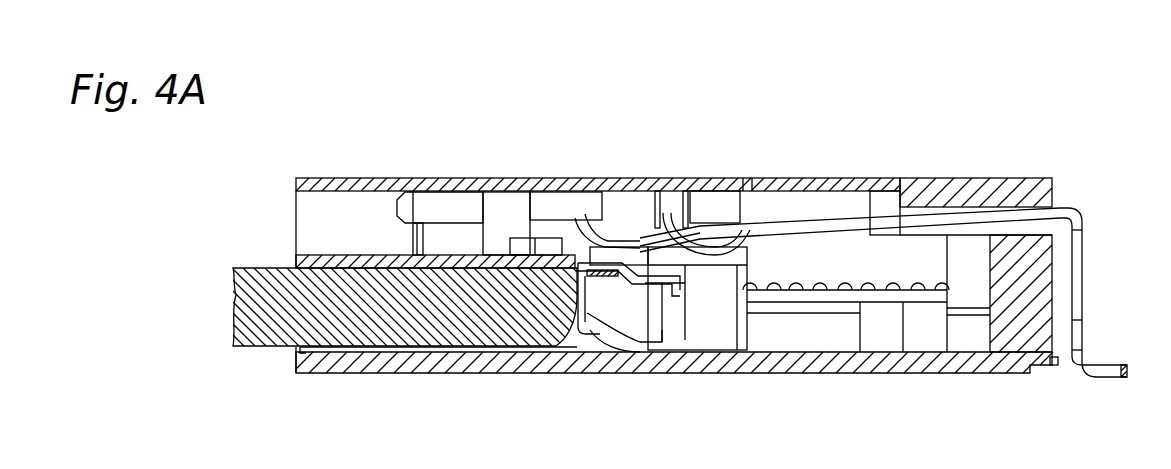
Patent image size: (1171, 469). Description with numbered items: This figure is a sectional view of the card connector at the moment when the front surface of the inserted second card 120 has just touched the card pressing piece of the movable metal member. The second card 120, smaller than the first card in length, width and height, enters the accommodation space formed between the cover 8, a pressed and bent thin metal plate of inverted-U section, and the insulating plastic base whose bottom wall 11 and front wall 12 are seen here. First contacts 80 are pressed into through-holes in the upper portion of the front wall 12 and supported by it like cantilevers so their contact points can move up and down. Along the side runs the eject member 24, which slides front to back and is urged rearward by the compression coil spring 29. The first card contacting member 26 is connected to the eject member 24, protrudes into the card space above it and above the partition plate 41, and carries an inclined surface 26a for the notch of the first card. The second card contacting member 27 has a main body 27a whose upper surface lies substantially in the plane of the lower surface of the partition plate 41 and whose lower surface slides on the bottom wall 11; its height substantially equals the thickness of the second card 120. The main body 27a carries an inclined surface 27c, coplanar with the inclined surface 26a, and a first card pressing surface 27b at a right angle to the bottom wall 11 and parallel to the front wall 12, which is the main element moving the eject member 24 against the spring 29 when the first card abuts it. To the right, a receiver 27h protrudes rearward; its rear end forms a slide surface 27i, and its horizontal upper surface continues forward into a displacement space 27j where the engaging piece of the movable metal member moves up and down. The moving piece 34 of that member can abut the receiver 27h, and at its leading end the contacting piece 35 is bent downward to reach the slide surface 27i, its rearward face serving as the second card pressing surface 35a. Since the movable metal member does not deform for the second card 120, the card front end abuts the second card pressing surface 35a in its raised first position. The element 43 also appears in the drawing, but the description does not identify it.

The cover 8 is at (354, 178).
The bottom wall 11 is at (375, 373).
The front wall 12 is at (980, 195).
The eject member 24 is at (627, 206).
The first card contacting member 26 is at (437, 195).
The inclined surface 26a is at (497, 192).
The second card contacting member 27 is at (716, 326).
The main body 27a is at (713, 270).
The first card pressing surface 27b is at (640, 350).
The inclined surface 27c is at (600, 240).
The receiver 27h is at (598, 345).
The slide surface 27i is at (590, 345).
The displacement space 27j is at (675, 350).
The compression coil spring 29 is at (908, 250).
The moving piece 34 is at (652, 195).
The contacting piece 35 is at (620, 345).
The second card pressing surface 35a is at (585, 340).
The partition plate 41 is at (325, 258).
The roller holder 43 is at (903, 292).
The first contacts 80 is at (1083, 257).
The second card 120 is at (232, 279).